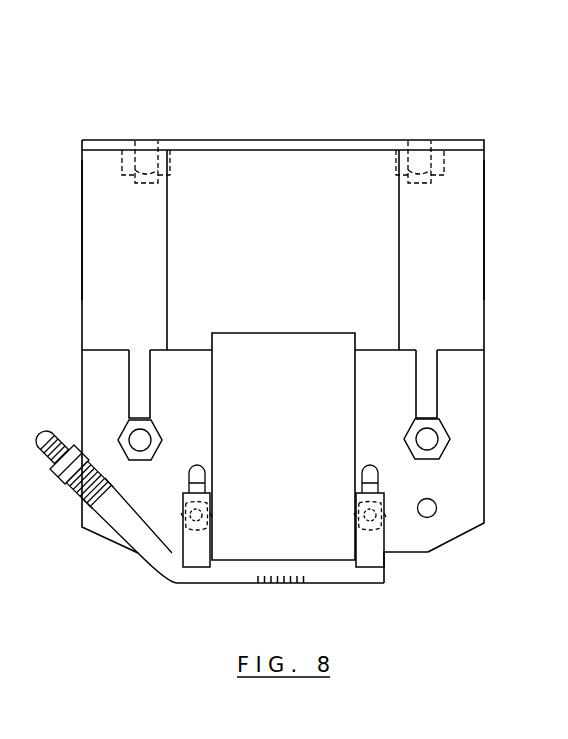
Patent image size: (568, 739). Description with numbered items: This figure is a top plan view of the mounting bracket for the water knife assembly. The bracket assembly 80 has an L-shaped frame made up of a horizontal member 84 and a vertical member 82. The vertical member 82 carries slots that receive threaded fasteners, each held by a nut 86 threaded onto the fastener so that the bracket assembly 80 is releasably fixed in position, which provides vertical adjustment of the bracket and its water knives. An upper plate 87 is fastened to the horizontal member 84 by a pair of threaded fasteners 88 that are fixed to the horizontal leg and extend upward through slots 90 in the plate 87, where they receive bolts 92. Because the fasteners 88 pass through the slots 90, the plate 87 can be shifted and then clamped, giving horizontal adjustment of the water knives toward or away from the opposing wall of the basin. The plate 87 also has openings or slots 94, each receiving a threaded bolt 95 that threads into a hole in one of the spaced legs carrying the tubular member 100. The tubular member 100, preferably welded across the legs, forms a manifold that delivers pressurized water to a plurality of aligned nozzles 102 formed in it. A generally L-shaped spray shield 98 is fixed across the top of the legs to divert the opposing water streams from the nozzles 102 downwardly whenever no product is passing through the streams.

The bracket assembly 80 is at (86, 112).
The vertical member 82 is at (278, 147).
The horizontal member 84 is at (90, 224).
The nut 86 is at (177, 152).
The upper plate 87 is at (178, 350).
The threaded fastener 88 is at (432, 446).
The slot 90 is at (130, 362).
The bolt 92 is at (122, 430).
The opening or slot 94 is at (201, 466).
The threaded bolt 95 is at (382, 556).
The spray shield 98 is at (285, 342).
The tubular member 100 is at (250, 563).
The nozzle 102 is at (290, 584).